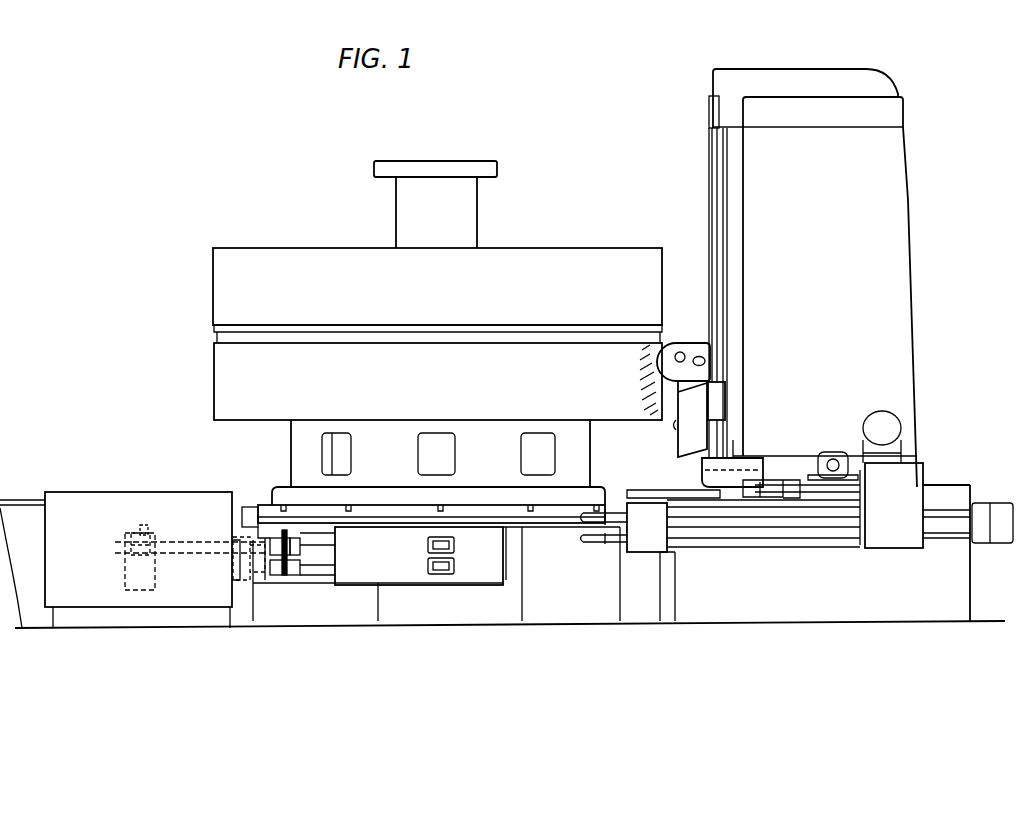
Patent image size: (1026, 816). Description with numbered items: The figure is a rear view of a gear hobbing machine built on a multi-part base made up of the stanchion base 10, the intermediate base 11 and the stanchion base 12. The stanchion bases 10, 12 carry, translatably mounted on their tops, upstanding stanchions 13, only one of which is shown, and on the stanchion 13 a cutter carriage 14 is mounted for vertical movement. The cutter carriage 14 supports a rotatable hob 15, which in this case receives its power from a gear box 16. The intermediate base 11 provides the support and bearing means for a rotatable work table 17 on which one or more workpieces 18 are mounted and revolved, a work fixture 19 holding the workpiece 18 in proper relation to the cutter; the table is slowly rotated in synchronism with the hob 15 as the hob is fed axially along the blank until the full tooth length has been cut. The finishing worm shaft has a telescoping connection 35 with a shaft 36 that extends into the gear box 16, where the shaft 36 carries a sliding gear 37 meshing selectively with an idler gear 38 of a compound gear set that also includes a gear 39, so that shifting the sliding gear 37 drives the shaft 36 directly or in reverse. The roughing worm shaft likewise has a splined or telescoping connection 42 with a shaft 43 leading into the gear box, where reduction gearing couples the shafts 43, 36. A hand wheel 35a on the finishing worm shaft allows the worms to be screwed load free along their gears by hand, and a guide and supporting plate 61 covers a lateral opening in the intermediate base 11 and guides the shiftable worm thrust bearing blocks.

The stanchion base 10 is at (955, 587).
The intermediate base 11 is at (578, 612).
The stanchion base 12 is at (33, 620).
The upstanding stanchion 13 is at (904, 306).
The cutter carriage 14 is at (687, 345).
The hob 15 is at (673, 428).
The gear box 16 is at (110, 500).
The work table 17 is at (262, 505).
The workpiece 18 is at (229, 366).
The work fixture 19 is at (299, 438).
The telescoping connection 35 is at (291, 577).
The hand wheel 35a is at (285, 577).
The shaft 36 is at (192, 541).
The sliding gear 37 is at (150, 514).
The idler gear 38 is at (150, 592).
The gear 39 is at (133, 592).
The telescoping connection 42 is at (296, 572).
The shaft 43 is at (272, 576).
The guide and supporting plate 61 is at (410, 570).